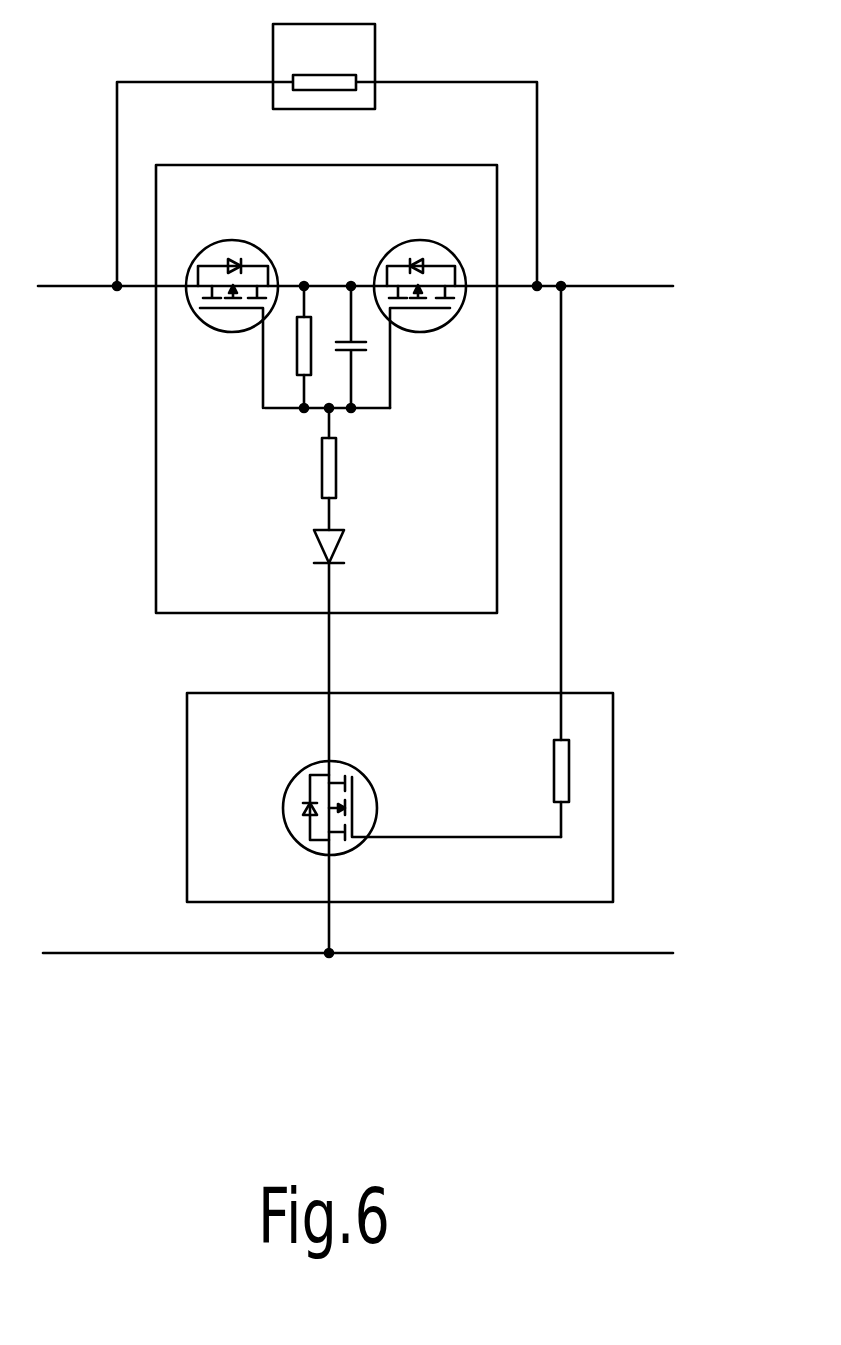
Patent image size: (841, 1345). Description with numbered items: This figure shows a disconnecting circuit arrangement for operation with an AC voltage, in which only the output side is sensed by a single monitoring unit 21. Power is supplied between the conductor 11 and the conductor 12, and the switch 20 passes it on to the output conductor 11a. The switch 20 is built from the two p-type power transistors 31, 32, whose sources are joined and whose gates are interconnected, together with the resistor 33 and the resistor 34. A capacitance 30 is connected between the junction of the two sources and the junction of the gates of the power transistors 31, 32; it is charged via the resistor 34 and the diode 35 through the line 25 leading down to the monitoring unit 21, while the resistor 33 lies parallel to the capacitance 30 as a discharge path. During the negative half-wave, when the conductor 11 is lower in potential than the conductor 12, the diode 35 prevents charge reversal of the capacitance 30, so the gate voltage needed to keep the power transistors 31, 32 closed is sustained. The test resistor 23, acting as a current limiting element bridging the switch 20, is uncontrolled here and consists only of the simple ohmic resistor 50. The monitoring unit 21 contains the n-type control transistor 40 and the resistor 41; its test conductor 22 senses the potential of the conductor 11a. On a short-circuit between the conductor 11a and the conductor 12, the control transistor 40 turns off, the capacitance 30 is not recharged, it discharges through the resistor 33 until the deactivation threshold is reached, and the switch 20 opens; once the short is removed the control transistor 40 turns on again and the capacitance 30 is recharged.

The conductor 11 is at (78, 285).
The conductor 11a is at (625, 283).
The conductor 12 is at (125, 952).
The switch 20 is at (156, 385).
The monitoring unit 21 is at (185, 805).
The test conductor 22 is at (563, 457).
The test resistor 23 is at (378, 65).
The control line 25 is at (327, 618).
The capacitance 30 is at (365, 350).
The power transistor 31 is at (215, 330).
The power transistor 32 is at (445, 330).
The resistor 33 is at (300, 348).
The resistor 34 is at (335, 455).
The diode 35 is at (340, 542).
The control transistor 40 is at (287, 823).
The resistor 41 is at (556, 765).
The ohmic resistor 50 is at (305, 80).